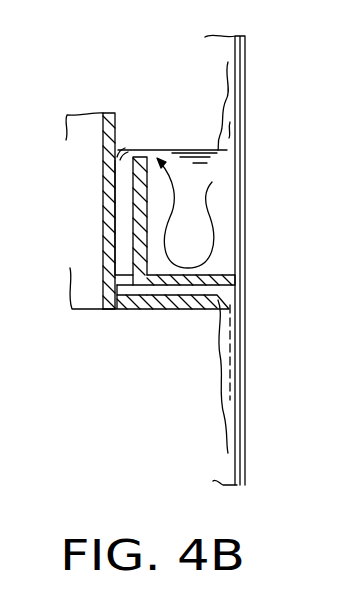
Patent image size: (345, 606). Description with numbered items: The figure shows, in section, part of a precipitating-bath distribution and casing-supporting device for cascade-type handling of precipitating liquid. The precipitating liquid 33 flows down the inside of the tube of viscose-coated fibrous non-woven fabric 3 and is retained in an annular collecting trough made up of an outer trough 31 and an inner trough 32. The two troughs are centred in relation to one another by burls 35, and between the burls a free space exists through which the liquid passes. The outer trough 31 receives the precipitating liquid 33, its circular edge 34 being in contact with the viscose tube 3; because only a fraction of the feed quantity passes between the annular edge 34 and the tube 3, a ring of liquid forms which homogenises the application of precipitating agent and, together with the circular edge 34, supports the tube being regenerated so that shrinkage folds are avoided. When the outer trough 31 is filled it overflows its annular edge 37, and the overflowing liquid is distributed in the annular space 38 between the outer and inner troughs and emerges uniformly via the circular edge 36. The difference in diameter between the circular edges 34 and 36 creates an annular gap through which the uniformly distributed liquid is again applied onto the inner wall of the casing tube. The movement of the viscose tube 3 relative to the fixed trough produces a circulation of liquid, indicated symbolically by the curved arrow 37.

The viscose-coated fibrous non-woven fabric tube 3 is at (243, 47).
The outer trough 31 is at (137, 193).
The inner trough 32 is at (103, 273).
The precipitating liquid 33 is at (232, 100).
The circular edge 34 is at (233, 280).
The burls 35 is at (147, 280).
The circular edge 36 is at (217, 307).
The annular edge / curved arrow 37 is at (138, 150).
The annular space 38 is at (123, 230).